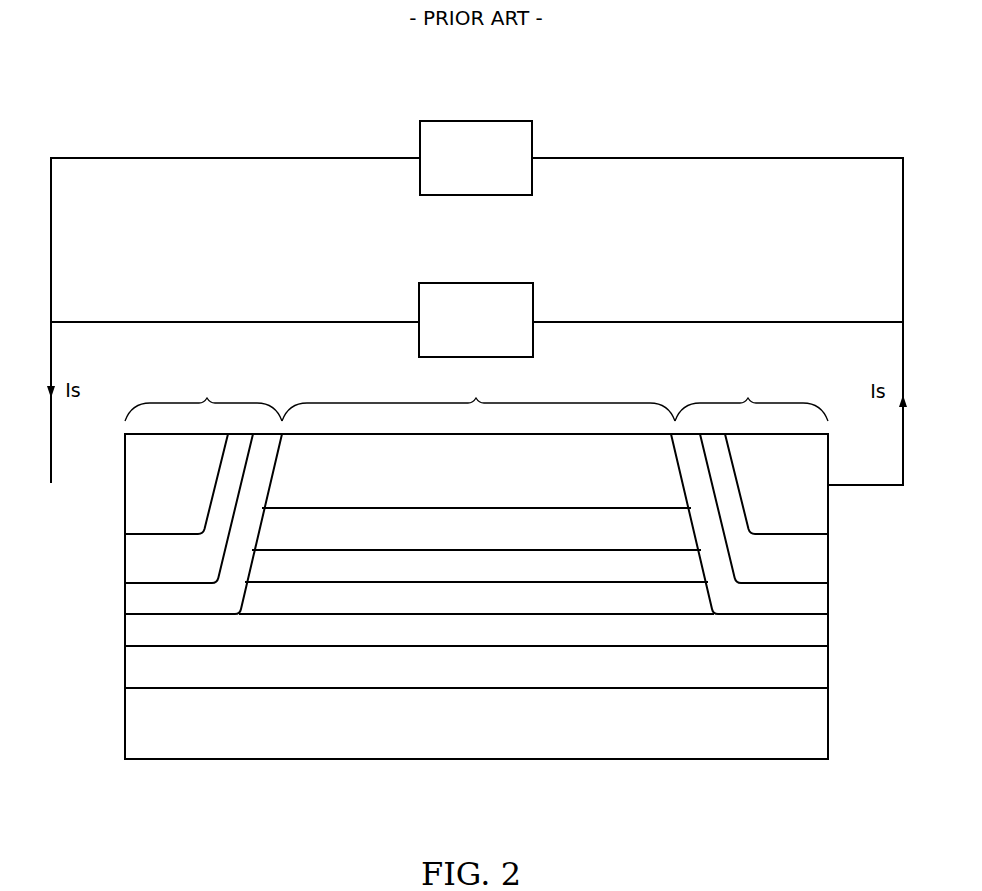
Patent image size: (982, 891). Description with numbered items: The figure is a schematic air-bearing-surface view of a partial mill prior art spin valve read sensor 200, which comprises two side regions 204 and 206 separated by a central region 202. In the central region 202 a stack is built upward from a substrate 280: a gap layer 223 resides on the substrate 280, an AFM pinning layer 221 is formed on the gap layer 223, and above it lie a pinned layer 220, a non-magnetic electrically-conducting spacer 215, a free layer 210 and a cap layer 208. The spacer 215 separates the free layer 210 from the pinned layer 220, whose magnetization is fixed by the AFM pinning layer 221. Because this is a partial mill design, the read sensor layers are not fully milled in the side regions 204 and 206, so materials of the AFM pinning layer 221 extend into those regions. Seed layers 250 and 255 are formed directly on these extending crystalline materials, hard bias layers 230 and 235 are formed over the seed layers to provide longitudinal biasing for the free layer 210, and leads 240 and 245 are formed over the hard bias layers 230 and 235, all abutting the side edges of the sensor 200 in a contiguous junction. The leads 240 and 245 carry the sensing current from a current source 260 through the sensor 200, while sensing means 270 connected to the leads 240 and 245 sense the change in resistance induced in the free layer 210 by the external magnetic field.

The prior art SV sensor 200 is at (789, 770).
The central region 202 is at (478, 395).
The side region 204 is at (203, 395).
The side region 206 is at (751, 395).
The cap layer 208 is at (518, 487).
The free layer 210 is at (526, 546).
The spacer layer 215 is at (539, 579).
The pinned layer 220 is at (534, 611).
The AFM pinning layer 221 is at (521, 641).
The gap layer 223 is at (521, 676).
The hard bias layer 230 is at (155, 579).
The hard bias layer 235 is at (760, 579).
The lead 240 is at (155, 509).
The lead 245 is at (760, 509).
The seed layer 250 is at (142, 598).
The seed layer 255 is at (808, 600).
The current source 260 is at (533, 302).
The sensing means 270 is at (532, 137).
The substrate 280 is at (559, 732).